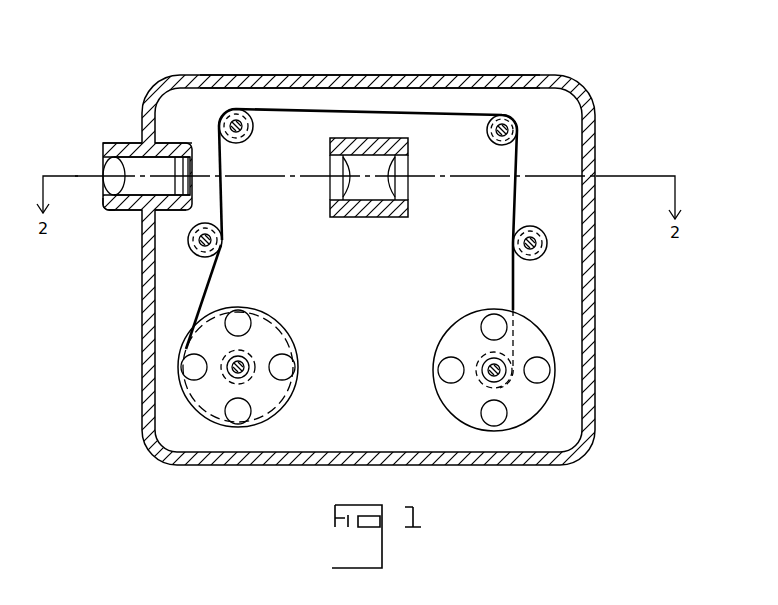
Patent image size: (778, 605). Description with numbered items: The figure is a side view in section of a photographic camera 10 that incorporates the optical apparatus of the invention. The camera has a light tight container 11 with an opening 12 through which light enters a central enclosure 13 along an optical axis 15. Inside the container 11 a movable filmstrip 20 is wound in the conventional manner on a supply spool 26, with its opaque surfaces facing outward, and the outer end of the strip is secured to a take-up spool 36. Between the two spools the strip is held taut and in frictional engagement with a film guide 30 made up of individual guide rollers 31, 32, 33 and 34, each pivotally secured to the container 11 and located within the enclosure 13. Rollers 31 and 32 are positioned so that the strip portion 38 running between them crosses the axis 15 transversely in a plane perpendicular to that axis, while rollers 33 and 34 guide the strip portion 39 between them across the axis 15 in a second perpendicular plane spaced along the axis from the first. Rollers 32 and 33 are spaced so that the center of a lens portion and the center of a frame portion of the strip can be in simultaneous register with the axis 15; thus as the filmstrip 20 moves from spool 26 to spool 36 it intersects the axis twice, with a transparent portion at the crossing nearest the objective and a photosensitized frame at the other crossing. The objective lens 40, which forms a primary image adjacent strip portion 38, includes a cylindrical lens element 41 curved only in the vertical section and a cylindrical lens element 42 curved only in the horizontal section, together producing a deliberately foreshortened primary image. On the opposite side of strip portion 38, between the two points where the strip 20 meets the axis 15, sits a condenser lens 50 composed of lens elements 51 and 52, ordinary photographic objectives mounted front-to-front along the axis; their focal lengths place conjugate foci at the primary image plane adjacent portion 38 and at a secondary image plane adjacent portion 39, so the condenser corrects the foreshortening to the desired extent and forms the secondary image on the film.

The photographic camera 10 is at (140, 288).
The light tight container 11 is at (340, 77).
The opening 12 is at (138, 163).
The central enclosure 13 is at (209, 97).
The optical axis 15 is at (92, 173).
The movable filmstrip 20 is at (205, 291).
The supply spool 26 is at (287, 327).
The film guide 30 is at (578, 260).
The guide roller 31 is at (190, 245).
The guide roller 32 is at (247, 138).
The guide roller 33 is at (487, 137).
The guide roller 34 is at (548, 241).
The take-up spool 36 is at (553, 375).
The strip portion 38 is at (218, 146).
The strip portion 39 is at (518, 167).
The objective lens 40 is at (118, 167).
The cylindrical lens element 41 is at (107, 200).
The cylindrical lens element 42 is at (182, 167).
The condenser lens 50 is at (398, 188).
The lens element 51 is at (345, 182).
The lens element 52 is at (382, 190).